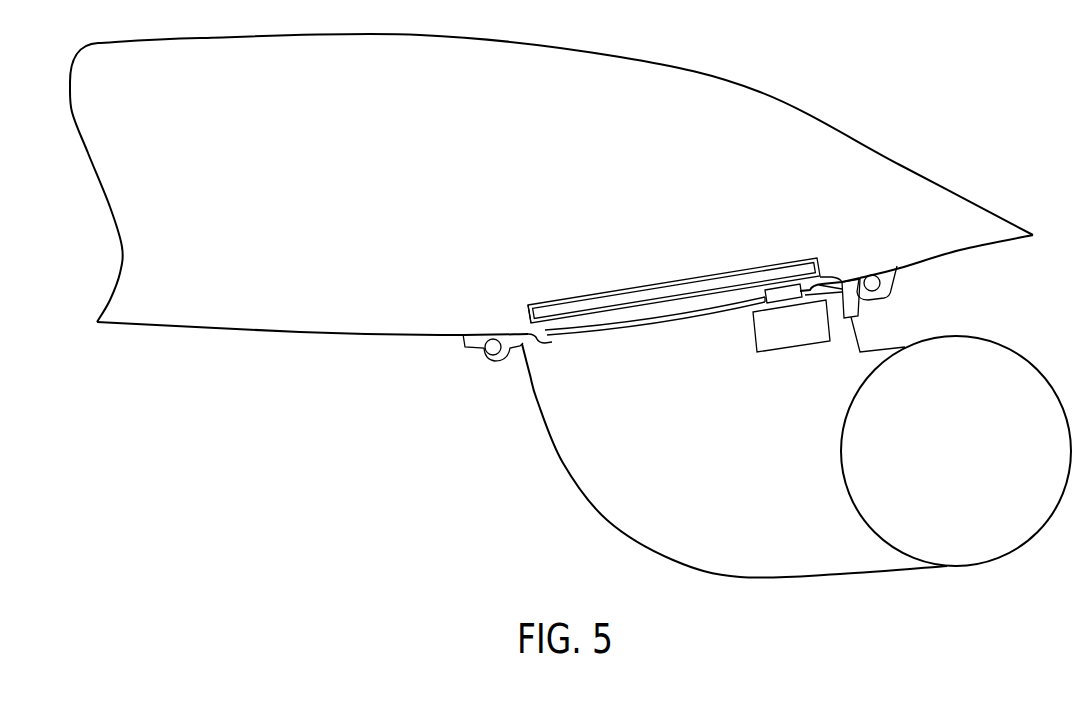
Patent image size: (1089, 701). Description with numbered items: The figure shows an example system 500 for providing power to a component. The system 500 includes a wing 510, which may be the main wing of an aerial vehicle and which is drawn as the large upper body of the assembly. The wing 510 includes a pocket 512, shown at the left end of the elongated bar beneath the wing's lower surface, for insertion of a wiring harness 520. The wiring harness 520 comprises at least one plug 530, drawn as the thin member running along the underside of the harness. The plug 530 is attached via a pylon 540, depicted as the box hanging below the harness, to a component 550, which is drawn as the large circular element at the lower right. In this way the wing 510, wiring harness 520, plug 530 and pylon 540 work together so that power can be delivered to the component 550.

The system 500 is at (496, 447).
The wing 510 is at (813, 135).
The pocket 512 is at (528, 318).
The wiring harness 520 is at (770, 263).
The plug 530 is at (758, 300).
The pylon 540 is at (795, 333).
The component 550 is at (1025, 382).